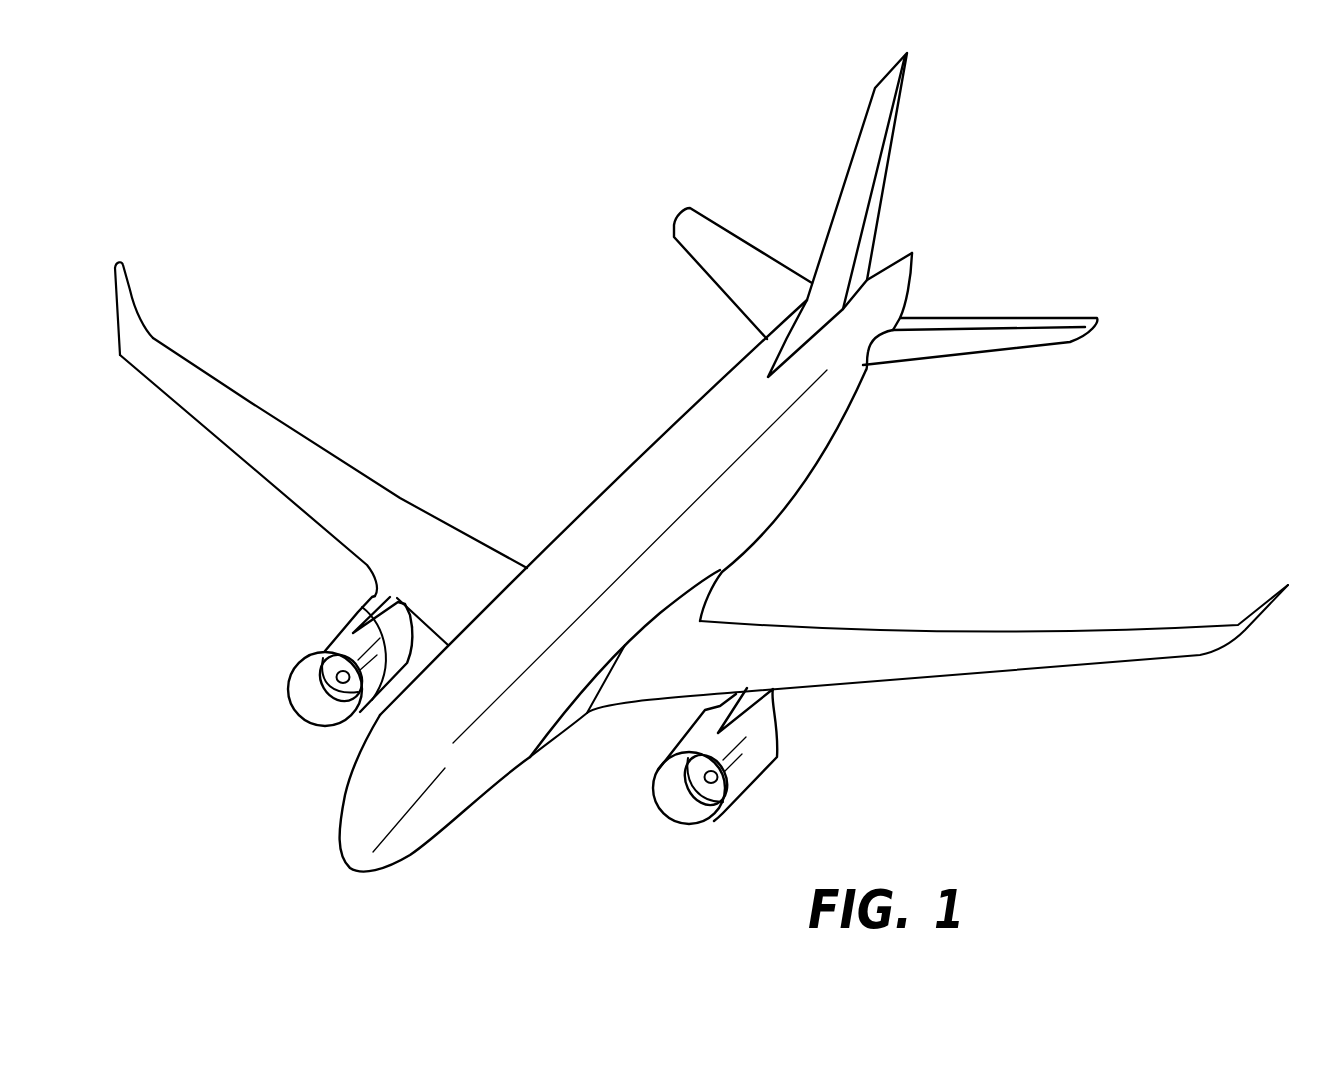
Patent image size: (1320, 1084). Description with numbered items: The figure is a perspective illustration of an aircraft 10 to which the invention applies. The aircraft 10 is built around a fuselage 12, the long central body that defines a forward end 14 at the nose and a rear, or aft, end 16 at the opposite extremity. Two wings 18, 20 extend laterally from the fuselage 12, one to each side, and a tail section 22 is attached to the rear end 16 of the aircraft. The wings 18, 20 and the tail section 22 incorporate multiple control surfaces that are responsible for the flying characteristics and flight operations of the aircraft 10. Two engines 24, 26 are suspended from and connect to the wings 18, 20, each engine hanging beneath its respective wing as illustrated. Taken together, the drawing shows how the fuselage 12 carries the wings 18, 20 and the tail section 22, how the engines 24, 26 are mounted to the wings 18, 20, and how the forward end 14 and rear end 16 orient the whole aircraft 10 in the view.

The aircraft 10 is at (1203, 361).
The fuselage 12 is at (773, 495).
The forward end 14 is at (343, 863).
The rear end 16 is at (912, 253).
The wing 18 is at (907, 646).
The wing 20 is at (348, 482).
The tail section 22 is at (868, 207).
The engine 24 is at (755, 768).
The engine 26 is at (331, 644).